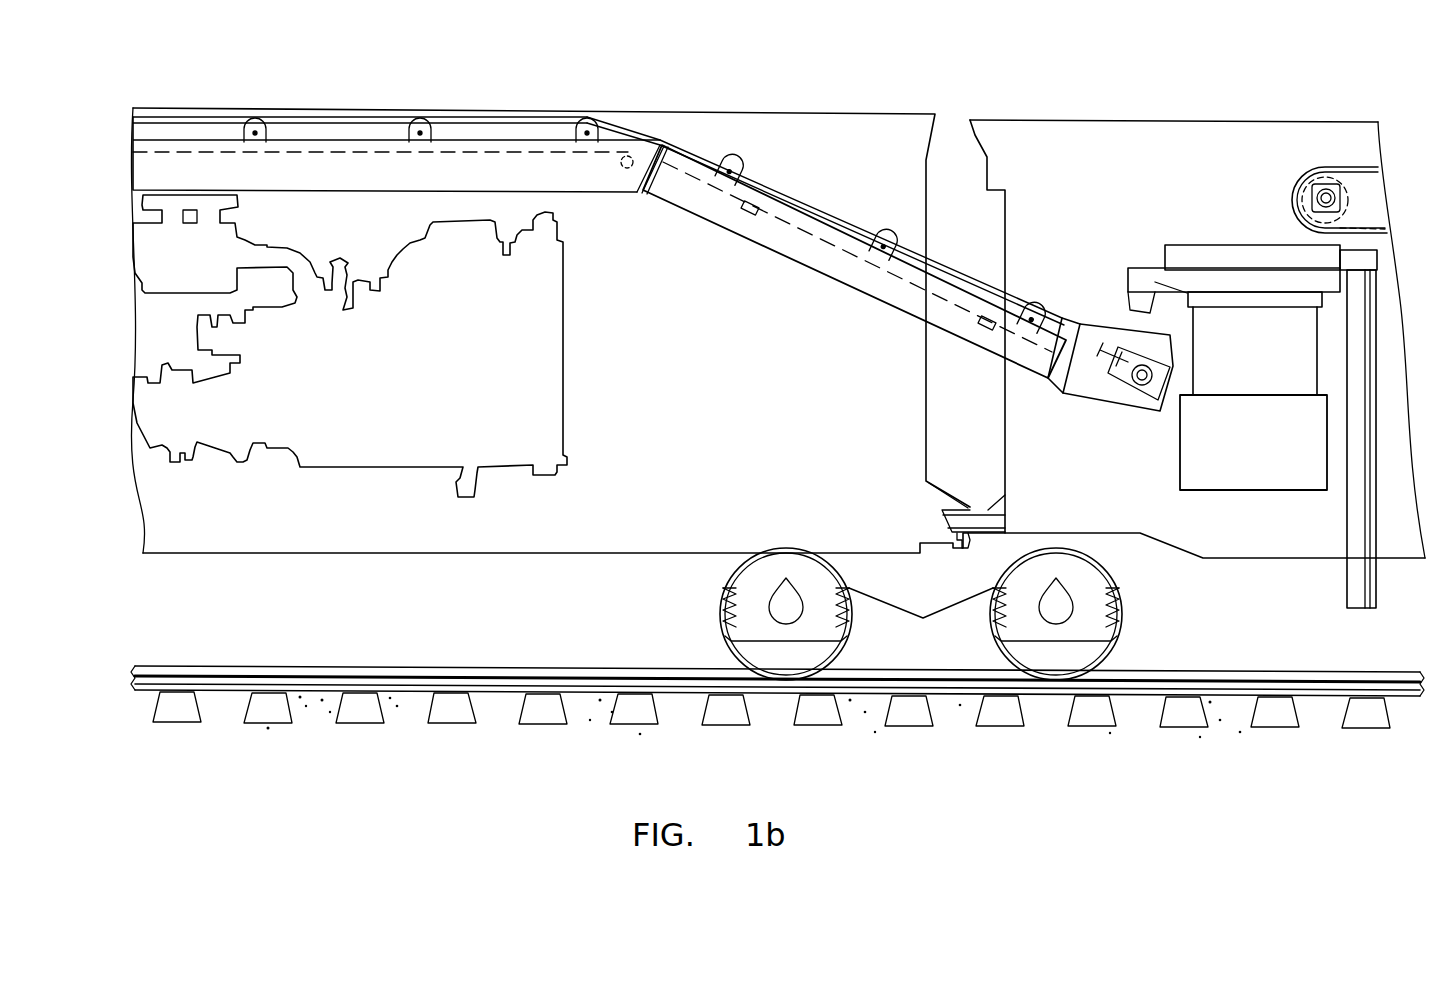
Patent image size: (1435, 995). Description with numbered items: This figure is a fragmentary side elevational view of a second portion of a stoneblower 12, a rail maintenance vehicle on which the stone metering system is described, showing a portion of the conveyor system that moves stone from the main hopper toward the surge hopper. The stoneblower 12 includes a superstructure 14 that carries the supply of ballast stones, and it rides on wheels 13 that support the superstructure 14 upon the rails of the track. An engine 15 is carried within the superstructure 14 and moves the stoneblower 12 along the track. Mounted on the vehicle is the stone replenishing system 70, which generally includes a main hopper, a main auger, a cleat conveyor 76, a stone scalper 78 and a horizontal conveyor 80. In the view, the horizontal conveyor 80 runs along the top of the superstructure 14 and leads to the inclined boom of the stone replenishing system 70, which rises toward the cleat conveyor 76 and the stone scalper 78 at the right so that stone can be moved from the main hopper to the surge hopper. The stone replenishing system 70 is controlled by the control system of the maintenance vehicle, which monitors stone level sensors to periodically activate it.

The stoneblower 12 is at (588, 95).
The wheels 13 is at (712, 601).
The superstructure 14 is at (676, 104).
The engine 15 is at (427, 470).
The stone replenishing system 70 is at (800, 155).
The cleat conveyor 76 is at (1304, 162).
The stone scalper 78 is at (1246, 496).
The horizontal conveyor 80 is at (858, 205).